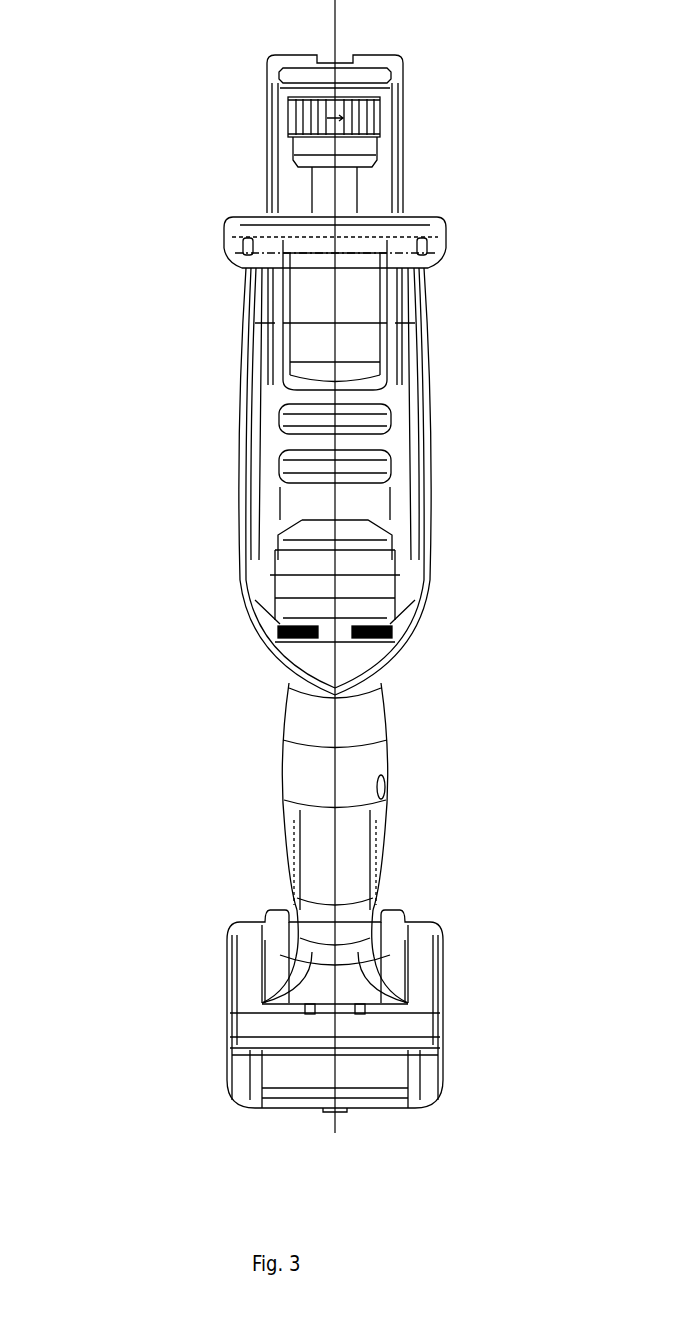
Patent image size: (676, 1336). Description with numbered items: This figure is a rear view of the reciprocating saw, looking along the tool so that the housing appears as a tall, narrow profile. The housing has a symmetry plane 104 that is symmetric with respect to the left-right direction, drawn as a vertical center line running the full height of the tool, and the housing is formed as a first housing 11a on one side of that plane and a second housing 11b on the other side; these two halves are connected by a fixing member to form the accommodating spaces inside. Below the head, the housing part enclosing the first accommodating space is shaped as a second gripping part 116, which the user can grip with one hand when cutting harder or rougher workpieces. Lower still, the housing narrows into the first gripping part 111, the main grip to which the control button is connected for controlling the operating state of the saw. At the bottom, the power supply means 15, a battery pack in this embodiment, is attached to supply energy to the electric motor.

The symmetry plane 104 is at (336, 4).
The first housing 11a is at (288, 176).
The second housing 11b is at (380, 166).
The second gripping part 116 is at (428, 452).
The first gripping part 111 is at (383, 848).
The power supply means 15 is at (445, 1005).